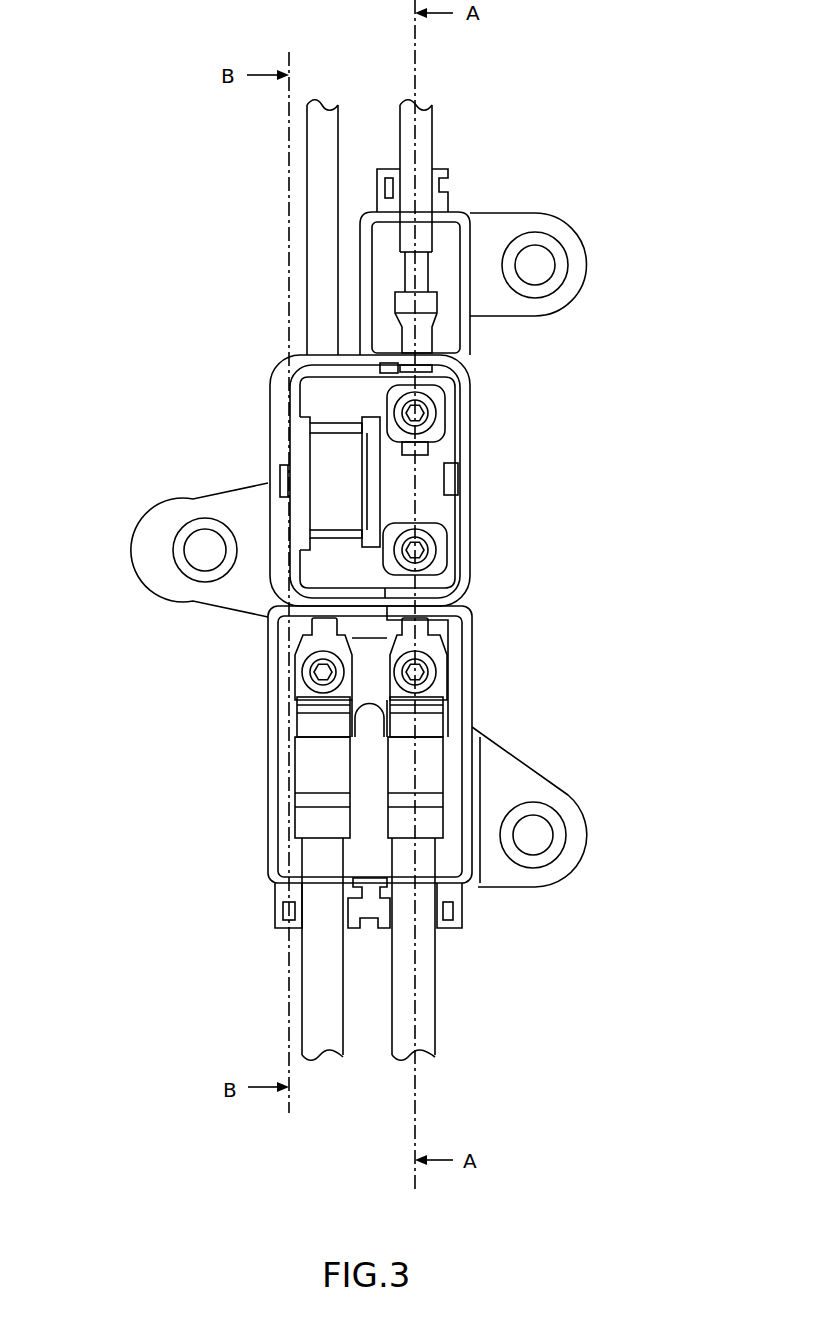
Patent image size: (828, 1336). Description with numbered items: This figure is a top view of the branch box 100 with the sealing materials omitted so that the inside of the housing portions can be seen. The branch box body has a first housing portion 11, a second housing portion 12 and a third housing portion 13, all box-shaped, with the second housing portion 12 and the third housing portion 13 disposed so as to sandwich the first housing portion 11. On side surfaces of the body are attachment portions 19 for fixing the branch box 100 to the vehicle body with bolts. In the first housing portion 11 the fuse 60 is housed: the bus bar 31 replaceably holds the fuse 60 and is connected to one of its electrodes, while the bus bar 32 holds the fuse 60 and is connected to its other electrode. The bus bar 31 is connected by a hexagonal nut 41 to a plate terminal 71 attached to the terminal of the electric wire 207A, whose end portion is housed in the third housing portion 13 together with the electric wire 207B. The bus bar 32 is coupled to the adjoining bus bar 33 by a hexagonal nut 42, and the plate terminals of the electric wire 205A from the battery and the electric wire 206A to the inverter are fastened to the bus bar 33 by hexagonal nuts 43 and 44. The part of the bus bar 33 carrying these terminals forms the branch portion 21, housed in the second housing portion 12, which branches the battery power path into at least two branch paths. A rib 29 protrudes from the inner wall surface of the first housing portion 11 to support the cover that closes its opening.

The branch box 100 is at (136, 303).
The first housing portion 11 is at (503, 456).
The second housing portion 12 is at (506, 721).
The third housing portion 13 is at (508, 338).
The attachment portion 19 is at (587, 265).
The branch portion 21 is at (370, 660).
The rib 29 is at (282, 475).
The bus bar 31 is at (312, 392).
The bus bar 32 is at (313, 568).
The bus bar 33 is at (440, 580).
The hexagonal nut 41 is at (430, 414).
The hexagonal nut 42 is at (432, 550).
The hexagonal nut 43 is at (303, 672).
The hexagonal nut 44 is at (436, 668).
The fuse 60 is at (322, 455).
The plate terminal 71 is at (427, 375).
The electric wire 205A is at (302, 1013).
The electric wire 206A is at (437, 1013).
The electric wire 207A is at (433, 133).
The electric wire 207B is at (307, 133).